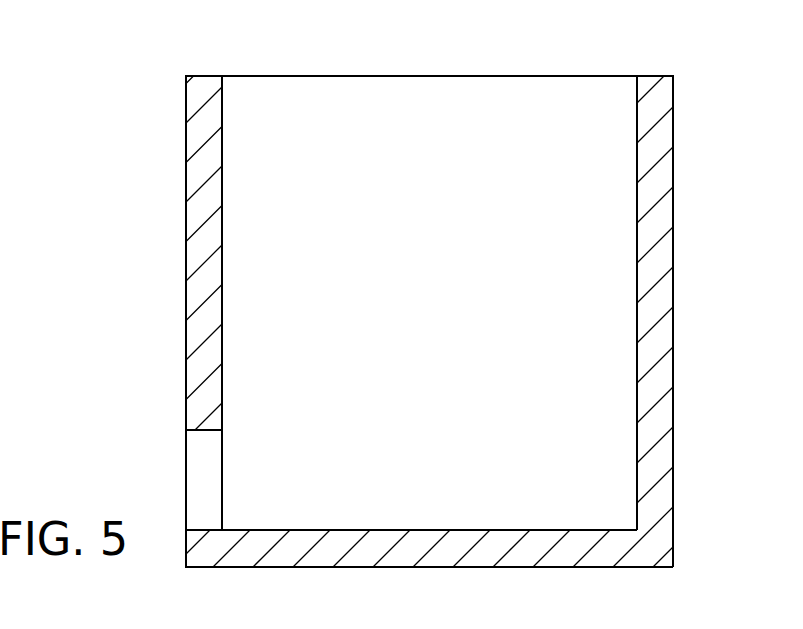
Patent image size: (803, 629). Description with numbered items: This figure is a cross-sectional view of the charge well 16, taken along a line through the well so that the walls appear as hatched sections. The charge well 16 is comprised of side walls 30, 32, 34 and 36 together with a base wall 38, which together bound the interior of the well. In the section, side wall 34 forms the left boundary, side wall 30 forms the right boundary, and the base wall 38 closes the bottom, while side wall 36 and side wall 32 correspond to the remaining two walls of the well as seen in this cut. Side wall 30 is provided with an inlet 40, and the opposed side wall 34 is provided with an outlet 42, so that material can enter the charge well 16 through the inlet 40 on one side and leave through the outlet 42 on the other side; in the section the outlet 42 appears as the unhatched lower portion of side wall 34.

The charge well 16 is at (448, 301).
The side wall 30 is at (658, 181).
The side wall 32 is at (492, 625).
The side wall 34 is at (198, 182).
The side wall 36 is at (445, 76).
The base wall 38 is at (517, 555).
The inlet 40 is at (310, 625).
The outlet 42 is at (197, 470).